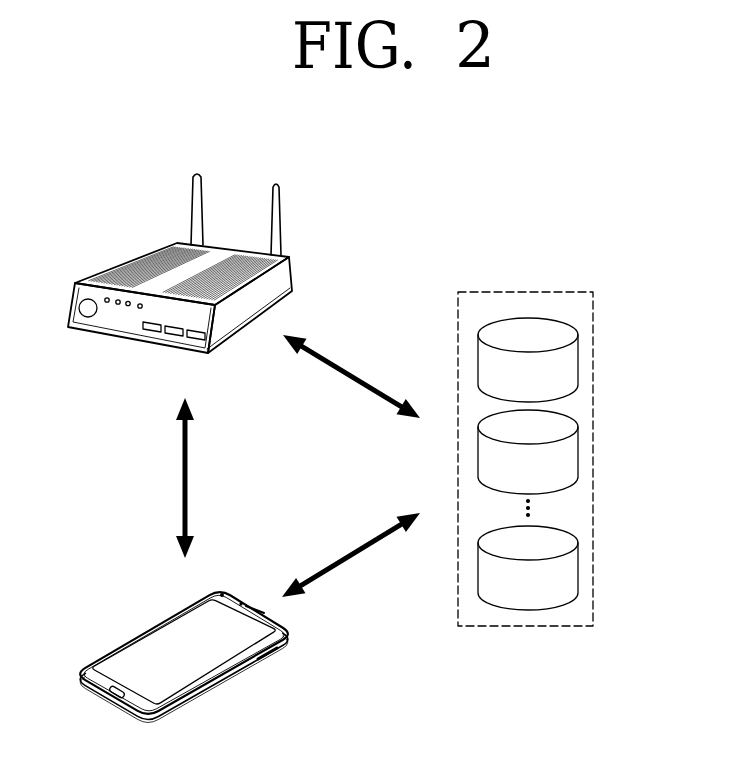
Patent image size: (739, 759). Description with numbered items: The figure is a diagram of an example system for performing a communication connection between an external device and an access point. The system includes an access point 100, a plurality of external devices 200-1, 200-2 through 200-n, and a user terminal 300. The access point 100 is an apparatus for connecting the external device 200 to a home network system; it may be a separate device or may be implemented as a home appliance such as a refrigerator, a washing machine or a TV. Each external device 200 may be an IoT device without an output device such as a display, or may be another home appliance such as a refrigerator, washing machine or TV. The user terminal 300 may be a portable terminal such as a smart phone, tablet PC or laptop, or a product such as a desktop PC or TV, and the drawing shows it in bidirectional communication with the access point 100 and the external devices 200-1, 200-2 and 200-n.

The access point 100 is at (122, 262).
The external device 200 is at (567, 429).
The external device 200-1 is at (578, 357).
The external device 200-2 is at (578, 443).
The external device 200-n is at (578, 563).
The user terminal 300 is at (123, 640).